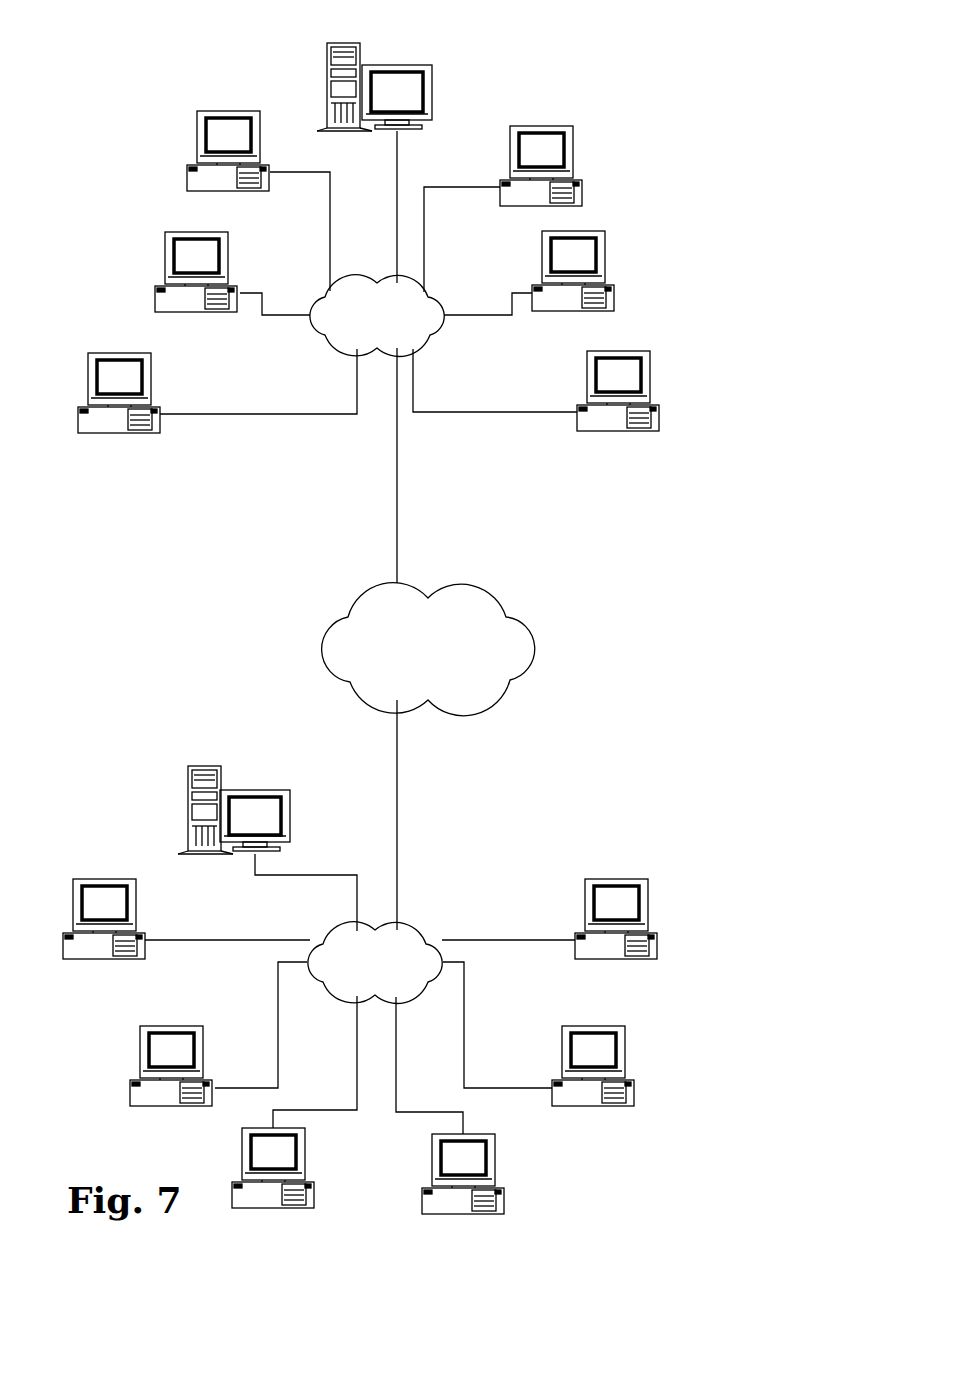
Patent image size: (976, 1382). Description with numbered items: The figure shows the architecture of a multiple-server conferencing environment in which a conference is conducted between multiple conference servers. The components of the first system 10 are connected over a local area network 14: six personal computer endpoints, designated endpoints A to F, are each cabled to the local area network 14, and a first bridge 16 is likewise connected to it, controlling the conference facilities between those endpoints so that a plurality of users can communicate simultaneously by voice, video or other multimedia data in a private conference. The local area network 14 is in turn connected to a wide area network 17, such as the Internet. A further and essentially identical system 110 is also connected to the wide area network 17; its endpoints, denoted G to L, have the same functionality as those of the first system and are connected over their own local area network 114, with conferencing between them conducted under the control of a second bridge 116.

The conference environment 10 is at (641, 63).
The local area network 14 is at (423, 337).
The conference bridge 16 is at (432, 88).
The wide area network 17 is at (318, 648).
The second system 110 is at (530, 866).
The local area network 114 is at (420, 985).
The second bridge 116 is at (290, 812).